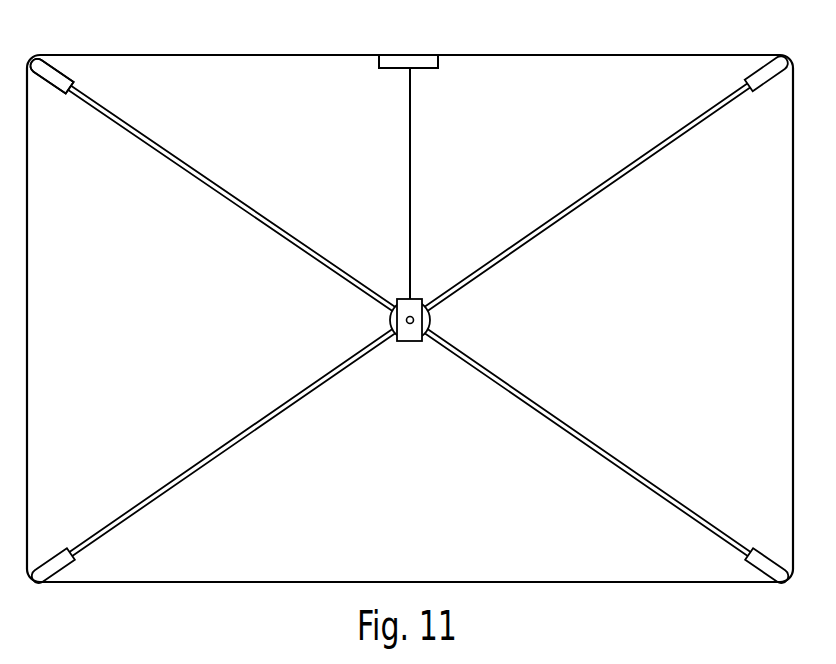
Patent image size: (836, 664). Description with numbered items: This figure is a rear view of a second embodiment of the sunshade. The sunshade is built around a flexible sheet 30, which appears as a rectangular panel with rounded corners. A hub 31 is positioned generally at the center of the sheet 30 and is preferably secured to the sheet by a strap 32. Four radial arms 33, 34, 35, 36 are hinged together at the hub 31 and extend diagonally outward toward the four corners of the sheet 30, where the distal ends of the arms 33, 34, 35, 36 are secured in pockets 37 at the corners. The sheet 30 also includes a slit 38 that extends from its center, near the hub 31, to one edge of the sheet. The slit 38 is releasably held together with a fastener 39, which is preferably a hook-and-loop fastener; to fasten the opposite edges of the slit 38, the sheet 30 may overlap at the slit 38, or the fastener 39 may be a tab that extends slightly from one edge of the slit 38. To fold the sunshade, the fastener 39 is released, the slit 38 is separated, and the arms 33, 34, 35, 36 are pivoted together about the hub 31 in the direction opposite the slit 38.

The flexible sheet 30 is at (568, 57).
The hub 31 is at (423, 320).
The strap 32 is at (410, 342).
The radial arm 33 is at (221, 195).
The radial arm 34 is at (222, 448).
The radial arm 35 is at (600, 446).
The radial arm 36 is at (598, 192).
The pocket 37 is at (50, 85).
The slit 38 is at (411, 180).
The fastener 39 is at (393, 64).